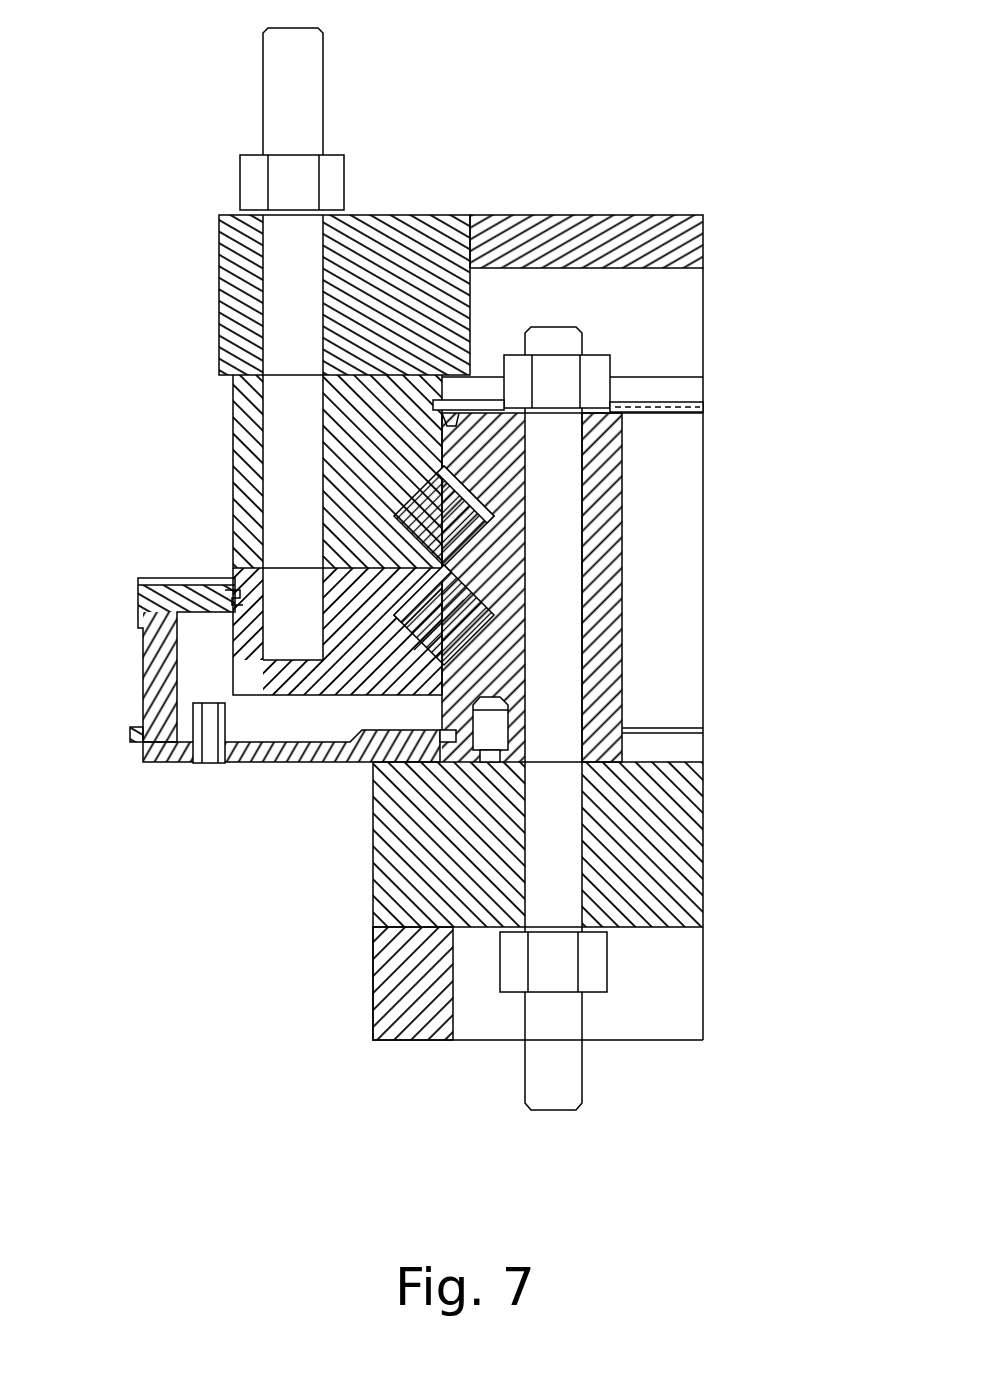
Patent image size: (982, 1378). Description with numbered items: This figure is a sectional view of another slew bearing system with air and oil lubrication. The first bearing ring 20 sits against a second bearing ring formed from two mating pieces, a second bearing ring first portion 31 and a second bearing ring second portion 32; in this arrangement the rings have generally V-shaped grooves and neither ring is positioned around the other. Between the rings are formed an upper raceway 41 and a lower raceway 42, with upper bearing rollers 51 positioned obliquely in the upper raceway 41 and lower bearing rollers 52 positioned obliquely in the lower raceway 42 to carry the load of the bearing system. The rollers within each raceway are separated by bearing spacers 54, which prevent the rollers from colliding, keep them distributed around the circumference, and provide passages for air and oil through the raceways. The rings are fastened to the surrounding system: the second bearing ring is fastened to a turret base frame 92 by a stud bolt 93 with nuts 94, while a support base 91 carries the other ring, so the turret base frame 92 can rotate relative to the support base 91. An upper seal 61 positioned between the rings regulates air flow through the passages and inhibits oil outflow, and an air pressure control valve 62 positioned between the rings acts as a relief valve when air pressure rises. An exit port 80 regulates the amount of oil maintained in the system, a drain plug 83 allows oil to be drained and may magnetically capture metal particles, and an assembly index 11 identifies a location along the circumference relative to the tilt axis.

The assembly index 11 is at (495, 722).
The first bearing ring 20 is at (608, 497).
The second bearing ring first portion 31 is at (255, 425).
The second bearing ring second portion 32 is at (335, 527).
The upper raceway 41 is at (445, 598).
The lower raceway 42 is at (432, 640).
The upper bearing rollers 51 is at (455, 552).
The lower bearing rollers 52 is at (445, 575).
The bearing spacers 54 is at (497, 467).
The upper seal 61 is at (448, 410).
The air pressure control valve 62 is at (232, 582).
The exit port 80 is at (210, 768).
The drain plug 83 is at (132, 742).
The support base 91 is at (662, 827).
The turret base frame 92 is at (237, 300).
The stud bolt 93 is at (305, 83).
The nut 94 is at (300, 190).